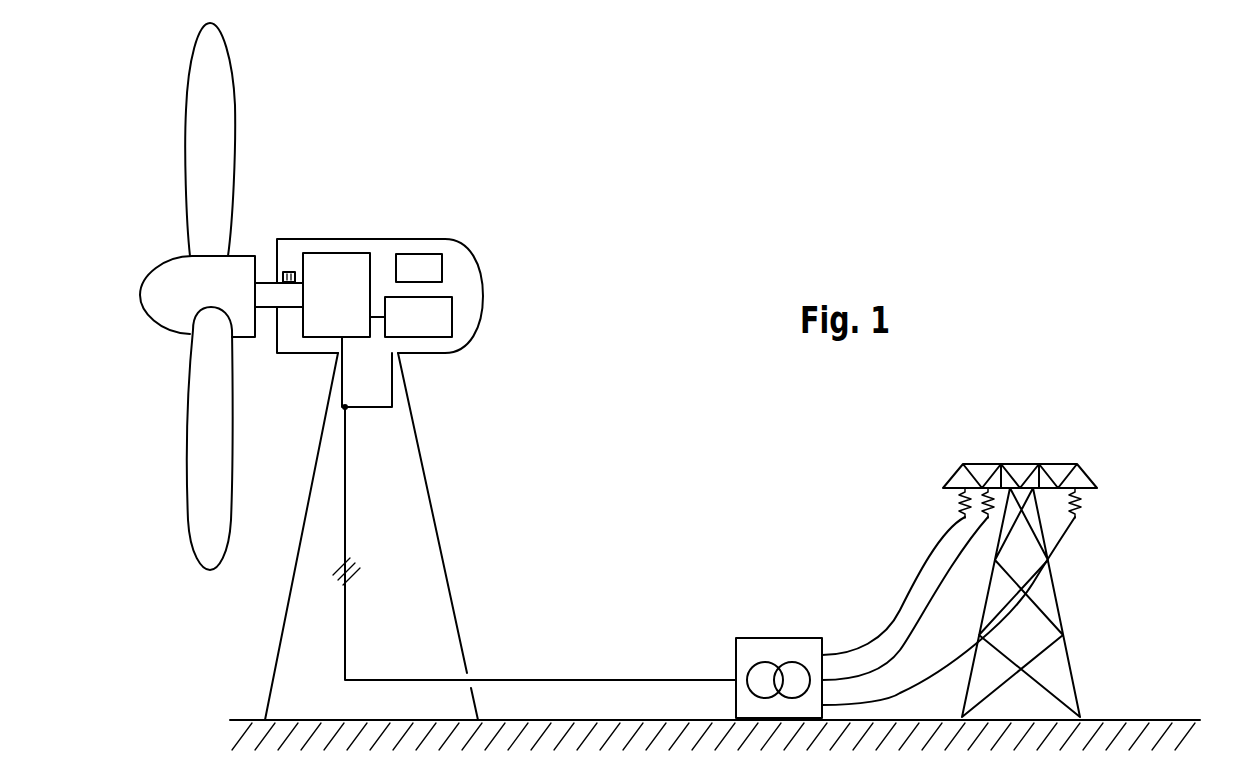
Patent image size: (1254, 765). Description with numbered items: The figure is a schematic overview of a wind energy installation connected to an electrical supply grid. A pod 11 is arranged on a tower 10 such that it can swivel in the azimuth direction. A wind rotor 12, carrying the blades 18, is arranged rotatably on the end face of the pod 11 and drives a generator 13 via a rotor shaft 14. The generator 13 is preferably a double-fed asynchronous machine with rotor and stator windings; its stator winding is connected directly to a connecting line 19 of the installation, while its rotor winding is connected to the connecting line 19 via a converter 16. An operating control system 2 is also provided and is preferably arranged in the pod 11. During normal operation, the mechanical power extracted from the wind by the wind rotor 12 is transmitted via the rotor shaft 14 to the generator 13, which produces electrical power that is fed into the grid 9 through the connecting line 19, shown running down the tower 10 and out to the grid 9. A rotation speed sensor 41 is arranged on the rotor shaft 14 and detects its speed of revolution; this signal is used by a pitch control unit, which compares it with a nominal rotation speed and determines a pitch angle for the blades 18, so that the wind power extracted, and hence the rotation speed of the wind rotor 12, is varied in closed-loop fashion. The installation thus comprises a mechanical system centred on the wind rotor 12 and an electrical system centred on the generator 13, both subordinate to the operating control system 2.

The operating control system 2 is at (418, 254).
The grid 9 is at (907, 534).
The tower 10 is at (283, 663).
The pod 11 is at (295, 239).
The wind rotor 12 is at (152, 238).
The generator 13 is at (347, 253).
The rotor shaft 14 is at (272, 300).
The converter 16 is at (452, 323).
The blades 18 is at (195, 122).
The connecting line 19 is at (345, 483).
The rotation speed sensor 41 is at (287, 270).